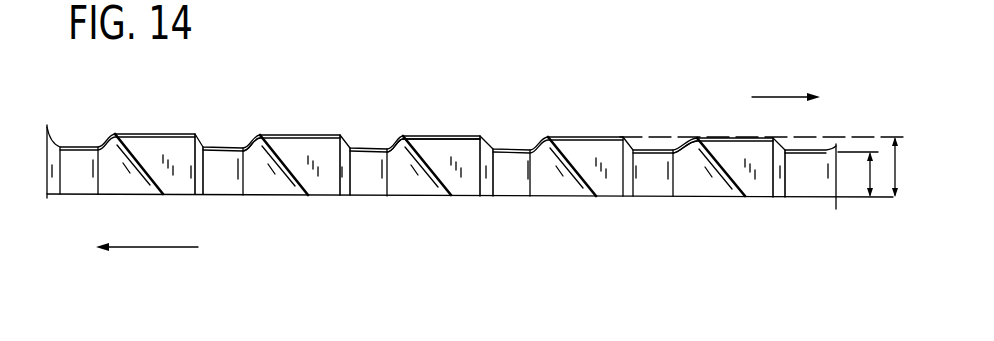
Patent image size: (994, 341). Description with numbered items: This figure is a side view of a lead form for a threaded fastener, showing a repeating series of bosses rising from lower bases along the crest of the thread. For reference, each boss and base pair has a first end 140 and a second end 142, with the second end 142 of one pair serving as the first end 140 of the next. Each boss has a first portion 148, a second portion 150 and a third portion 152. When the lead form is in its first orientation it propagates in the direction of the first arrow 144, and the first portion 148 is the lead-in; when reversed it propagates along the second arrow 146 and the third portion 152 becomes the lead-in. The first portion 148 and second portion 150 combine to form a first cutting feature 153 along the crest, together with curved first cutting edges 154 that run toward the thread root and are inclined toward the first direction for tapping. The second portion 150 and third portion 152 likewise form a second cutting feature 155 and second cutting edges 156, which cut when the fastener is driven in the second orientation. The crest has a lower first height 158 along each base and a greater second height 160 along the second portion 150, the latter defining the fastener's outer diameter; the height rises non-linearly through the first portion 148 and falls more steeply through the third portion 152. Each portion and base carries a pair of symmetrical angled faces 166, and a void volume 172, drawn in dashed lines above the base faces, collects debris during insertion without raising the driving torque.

The first end 140 is at (643, 167).
The second end 142 is at (786, 178).
The first arrow 144 is at (153, 247).
The second arrow 146 is at (782, 98).
The first portion 148 is at (393, 141).
The second portion 150 is at (458, 136).
The third portion 152 is at (492, 143).
The first cutting feature 153 is at (260, 134).
The first cutting edges 154 is at (144, 162).
The second cutting feature 155 is at (340, 134).
The second cutting edges 156 is at (202, 185).
The first height 158 is at (868, 177).
The second height 160 is at (893, 143).
The faces 166 is at (371, 189).
The void volume 172 is at (643, 147).